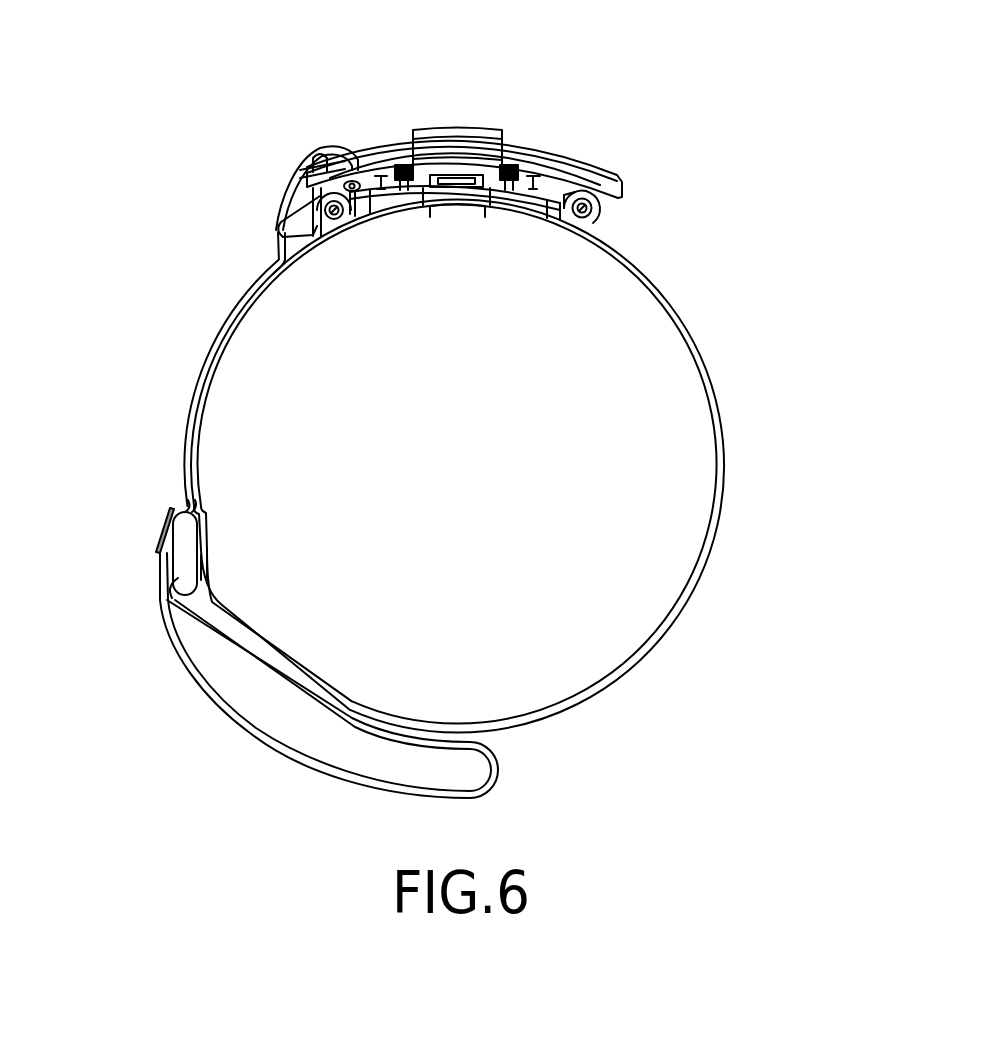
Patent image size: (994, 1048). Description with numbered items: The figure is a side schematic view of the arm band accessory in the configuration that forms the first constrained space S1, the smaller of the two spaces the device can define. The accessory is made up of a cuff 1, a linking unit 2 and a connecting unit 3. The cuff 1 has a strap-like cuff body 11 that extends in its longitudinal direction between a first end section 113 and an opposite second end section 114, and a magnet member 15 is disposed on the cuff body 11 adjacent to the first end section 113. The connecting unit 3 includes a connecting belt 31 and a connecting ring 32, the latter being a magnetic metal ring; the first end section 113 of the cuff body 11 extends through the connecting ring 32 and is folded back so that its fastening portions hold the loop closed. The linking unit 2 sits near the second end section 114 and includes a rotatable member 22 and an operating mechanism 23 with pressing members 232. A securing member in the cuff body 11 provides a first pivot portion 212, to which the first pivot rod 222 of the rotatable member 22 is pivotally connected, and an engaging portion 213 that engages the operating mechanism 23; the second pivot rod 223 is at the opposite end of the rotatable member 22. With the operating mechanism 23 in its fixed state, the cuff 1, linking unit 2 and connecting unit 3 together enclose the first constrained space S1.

The cuff 1 is at (439, 404).
The cuff body 11 is at (543, 723).
The first constrained space S1 is at (672, 447).
The first end section 113 is at (170, 507).
The second end section 114 is at (214, 590).
The magnet member 15 is at (163, 523).
The linking unit 2 is at (503, 107).
The rotatable member 22 is at (540, 205).
The first pivot portion 212 is at (338, 220).
The engaging portion 213 is at (460, 212).
The first pivot rod 222 is at (298, 233).
The second pivot rod 223 is at (590, 218).
The operating mechanism 23 is at (540, 148).
The pressing member 232 is at (438, 127).
The connecting unit 3 is at (318, 145).
The connecting belt 31 is at (297, 170).
The connecting ring 32 is at (183, 550).